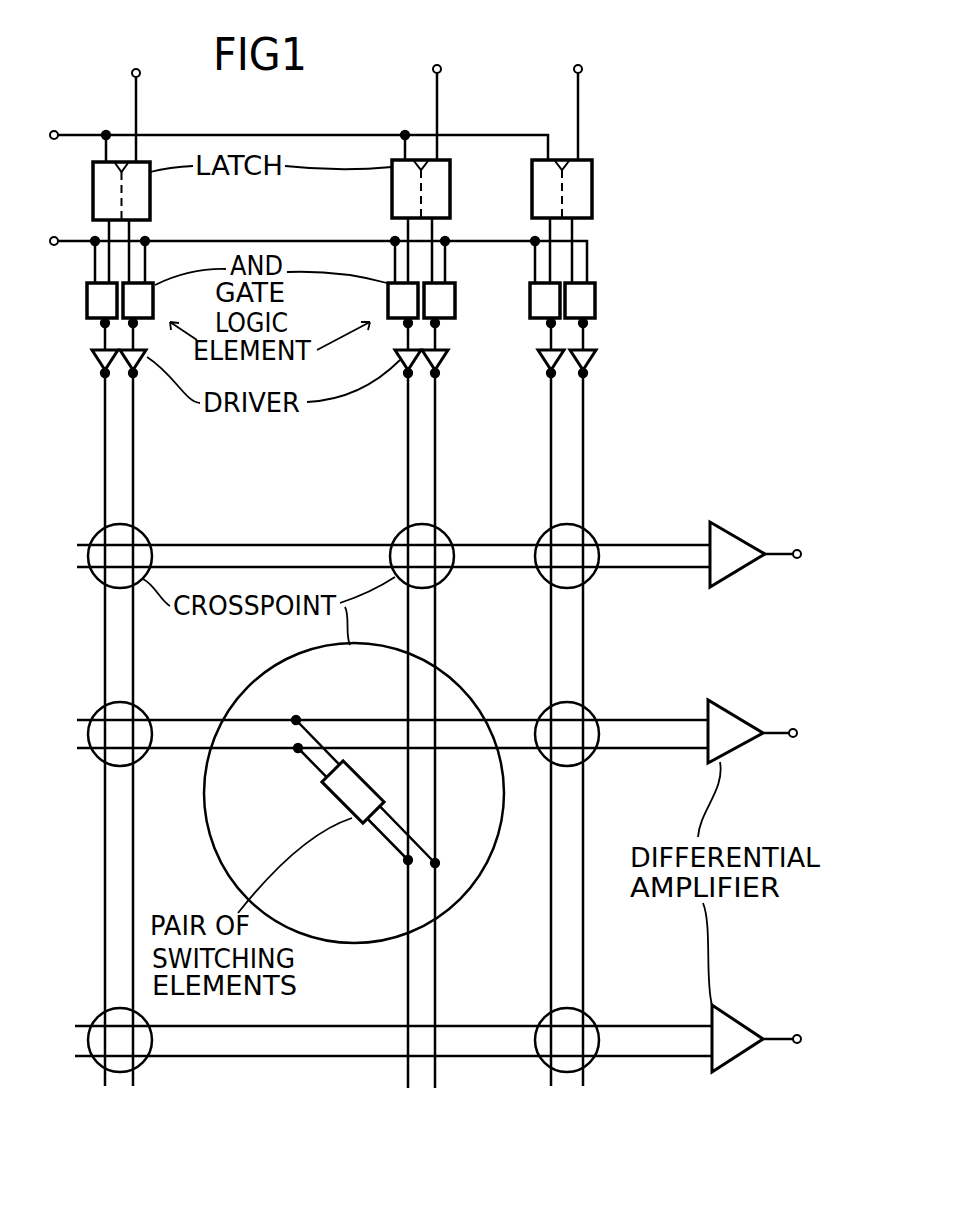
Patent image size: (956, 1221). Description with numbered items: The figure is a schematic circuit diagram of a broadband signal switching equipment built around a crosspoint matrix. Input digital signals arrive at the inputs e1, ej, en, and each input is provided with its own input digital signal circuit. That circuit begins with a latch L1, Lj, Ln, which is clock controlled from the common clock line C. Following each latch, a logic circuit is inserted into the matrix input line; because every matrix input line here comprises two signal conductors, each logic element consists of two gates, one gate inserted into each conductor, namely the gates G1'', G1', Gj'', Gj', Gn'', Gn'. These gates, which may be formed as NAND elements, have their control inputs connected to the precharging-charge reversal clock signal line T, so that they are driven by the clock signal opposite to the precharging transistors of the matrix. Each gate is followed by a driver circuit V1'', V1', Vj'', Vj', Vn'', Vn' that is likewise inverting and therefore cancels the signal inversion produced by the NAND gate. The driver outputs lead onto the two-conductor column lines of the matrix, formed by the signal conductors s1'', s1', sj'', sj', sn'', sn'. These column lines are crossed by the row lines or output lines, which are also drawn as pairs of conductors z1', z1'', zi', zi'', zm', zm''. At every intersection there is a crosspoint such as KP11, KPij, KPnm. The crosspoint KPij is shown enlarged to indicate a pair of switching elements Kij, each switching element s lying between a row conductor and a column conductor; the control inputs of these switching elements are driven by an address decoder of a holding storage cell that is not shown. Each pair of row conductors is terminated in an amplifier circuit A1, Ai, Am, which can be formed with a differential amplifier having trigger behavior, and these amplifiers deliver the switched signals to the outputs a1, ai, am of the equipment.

The clock line C is at (297, 130).
The precharging-charge reversal clock signal line T is at (318, 247).
The input e1 is at (133, 97).
The input ej is at (437, 96).
The input en is at (578, 96).
The latch L1 is at (142, 222).
The latch Lj is at (401, 221).
The latch Ln is at (583, 221).
The gate of logic circuit G1'' is at (77, 299).
The gate of logic circuit G1' is at (168, 299).
The gate of logic circuit Gj'' is at (380, 299).
The gate of logic circuit Gj' is at (459, 299).
The gate of logic circuit Gn'' is at (525, 299).
The gate of logic circuit Gn' is at (605, 299).
The driver circuit V1'' is at (82, 348).
The driver circuit V1' is at (160, 348).
The driver circuit Vj'' is at (383, 348).
The driver circuit Vj' is at (454, 348).
The driver circuit Vn'' is at (530, 348).
The driver circuit Vn' is at (608, 348).
The column line signal conductor s1'' is at (82, 728).
The column line signal conductor s1' is at (154, 728).
The column line signal conductor sj'' is at (386, 729).
The column line signal conductor sj' is at (456, 729).
The column line signal conductor sn'' is at (530, 728).
The column line signal conductor sn' is at (607, 728).
The row line conductor z1' is at (393, 526).
The row line conductor z1'' is at (393, 582).
The row line conductor zi' is at (392, 701).
The row line conductor zi'' is at (392, 766).
The row line conductor zm' is at (393, 1006).
The row line conductor zm'' is at (393, 1077).
The crosspoint KP11 is at (153, 543).
The crosspoint KPij is at (354, 793).
The crosspoint KPnm is at (544, 1066).
The pair of switching elements Kij is at (366, 792).
The switching element s is at (343, 810).
The amplifier circuit A1 is at (737, 540).
The amplifier circuit Ai is at (735, 719).
The amplifier circuit Am is at (739, 1023).
The output a1 is at (805, 554).
The output ai is at (795, 733).
The output am is at (805, 1039).